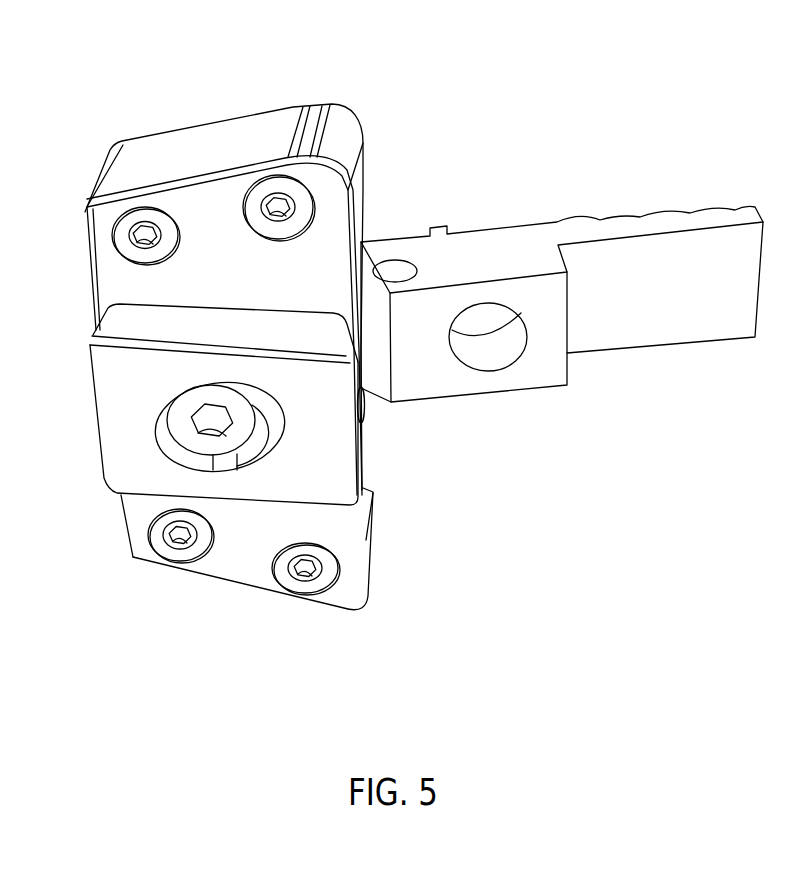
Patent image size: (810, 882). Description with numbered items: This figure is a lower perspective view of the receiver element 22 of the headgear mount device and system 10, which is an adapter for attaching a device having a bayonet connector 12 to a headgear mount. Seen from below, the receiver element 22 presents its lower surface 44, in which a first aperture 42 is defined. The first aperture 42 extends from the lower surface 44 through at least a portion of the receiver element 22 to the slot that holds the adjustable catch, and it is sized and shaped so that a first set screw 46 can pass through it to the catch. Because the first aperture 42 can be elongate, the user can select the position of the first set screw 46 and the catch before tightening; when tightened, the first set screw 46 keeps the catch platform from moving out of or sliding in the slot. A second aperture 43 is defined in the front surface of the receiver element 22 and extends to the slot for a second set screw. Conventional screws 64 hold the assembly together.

The headgear mount device and system 10 is at (486, 533).
The bayonet connector 12 is at (508, 246).
The receiver element 22 is at (197, 148).
The first aperture 42 is at (262, 428).
The second aperture 43 is at (367, 407).
The lower surface 44 is at (117, 452).
The first set screw 46 is at (187, 432).
The screws 64 is at (122, 233).